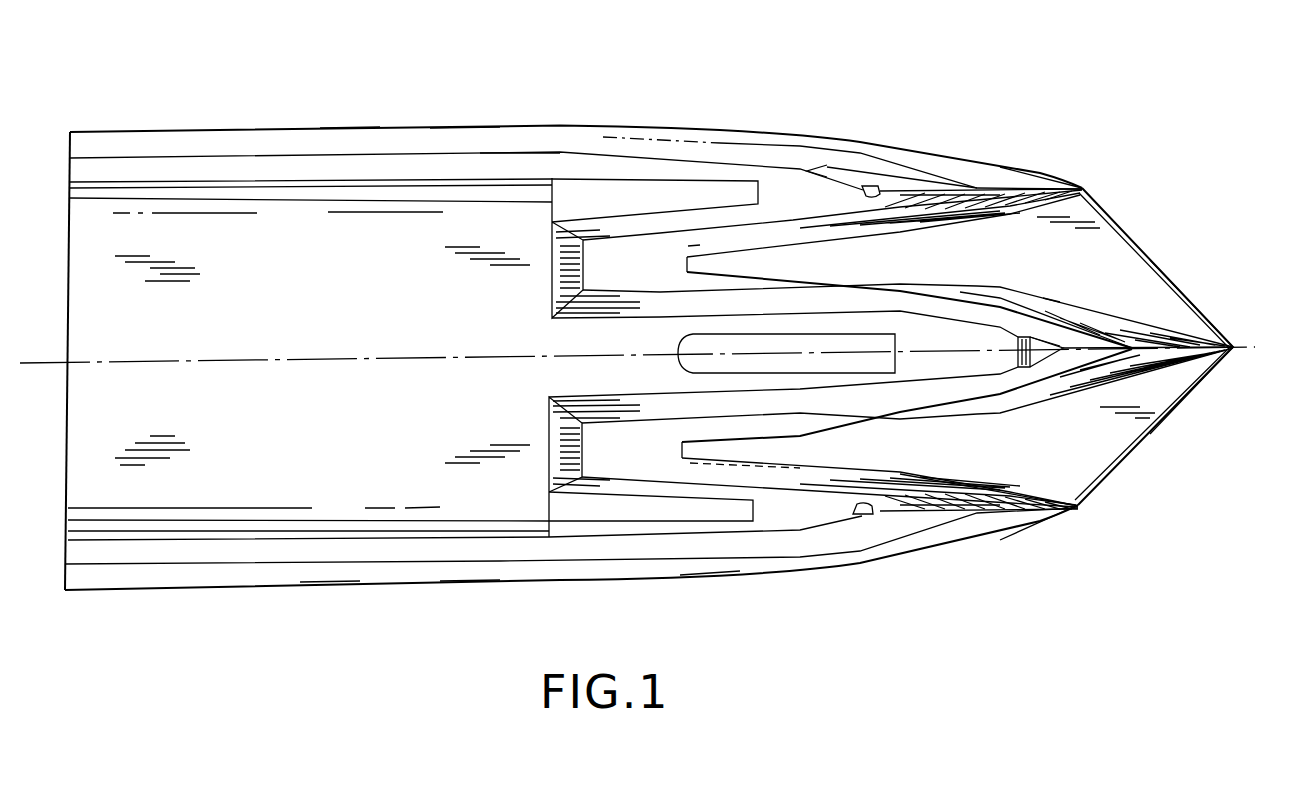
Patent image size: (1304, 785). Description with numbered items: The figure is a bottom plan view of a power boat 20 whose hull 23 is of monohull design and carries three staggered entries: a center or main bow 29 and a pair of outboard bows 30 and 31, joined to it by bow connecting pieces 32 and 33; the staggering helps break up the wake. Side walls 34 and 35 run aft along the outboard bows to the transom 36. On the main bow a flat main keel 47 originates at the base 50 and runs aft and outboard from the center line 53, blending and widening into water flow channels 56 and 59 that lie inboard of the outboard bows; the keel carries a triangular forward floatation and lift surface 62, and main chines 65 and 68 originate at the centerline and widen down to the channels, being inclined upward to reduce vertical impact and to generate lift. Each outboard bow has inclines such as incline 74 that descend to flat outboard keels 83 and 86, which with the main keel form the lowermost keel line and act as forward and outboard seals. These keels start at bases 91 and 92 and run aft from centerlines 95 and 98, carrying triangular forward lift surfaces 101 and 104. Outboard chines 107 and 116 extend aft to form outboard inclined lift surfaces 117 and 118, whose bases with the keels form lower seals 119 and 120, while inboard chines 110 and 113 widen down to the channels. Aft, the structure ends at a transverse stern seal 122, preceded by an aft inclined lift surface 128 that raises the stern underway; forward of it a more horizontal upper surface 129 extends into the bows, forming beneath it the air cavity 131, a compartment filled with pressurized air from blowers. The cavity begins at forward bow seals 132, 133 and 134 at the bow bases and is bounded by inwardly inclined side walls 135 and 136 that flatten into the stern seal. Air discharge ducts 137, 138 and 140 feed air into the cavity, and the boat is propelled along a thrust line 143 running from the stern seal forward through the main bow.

The power boat 20 is at (688, 96).
The hull 23 is at (461, 112).
The main bow 29 is at (1180, 292).
The outboard bow 30 is at (1035, 552).
The outboard bow 31 is at (1072, 158).
The bow connecting piece 32 is at (1082, 448).
The bow connecting piece 33 is at (1090, 264).
The side wall 34 is at (341, 588).
The side wall 35 is at (350, 128).
The transom 36 is at (67, 420).
The main keel 47 is at (977, 287).
The base of the main bow 50 is at (1043, 350).
The center line of the main bow 53 is at (1150, 345).
The water flow channel 56 is at (888, 446).
The water flow channel 59 is at (905, 257).
The forward floatation and hydrodynamic lift surface 62 is at (1045, 317).
The main chine 65 is at (992, 404).
The main chine 68 is at (1000, 300).
The outboard bow incline 74 is at (958, 479).
The outboard keel 83 is at (767, 538).
The outboard keel 86 is at (832, 171).
The base of the outboard bow 91 is at (912, 522).
The base of the outboard bow 92 is at (930, 189).
The centerline of the outboard bow 95 is at (1010, 506).
The centerline of the outboard bow 98 is at (1003, 190).
The forward floatation and hydrodynamic lift surface 101 is at (882, 516).
The forward floatation and hydrodynamic lift surface 104 is at (880, 188).
The outboard chine 107 is at (708, 573).
The outboard chine 110 is at (828, 474).
The outboard chine 113 is at (811, 232).
The outboard chine 116 is at (790, 143).
The outboard inclined lift surface 117 is at (200, 588).
The outboard inclined lift surface 118 is at (218, 146).
The lower seal 119 is at (470, 565).
The lower seal 120 is at (514, 153).
The stern seal 122 is at (85, 282).
The aft inclined lift surface 128 is at (305, 294).
The upper surface 129 is at (447, 336).
The air cavity 131 is at (90, 215).
The forward bow seal 132 is at (1014, 352).
The forward bow seal 133 is at (855, 514).
The forward bow seal 134 is at (866, 186).
The side wall of the air cavity 135 is at (410, 506).
The side wall of the air cavity 136 is at (297, 172).
The air discharge duct 137 is at (678, 354).
The air discharge duct 138 is at (482, 507).
The air discharge duct 140 is at (537, 205).
The thrust line 143 is at (268, 363).